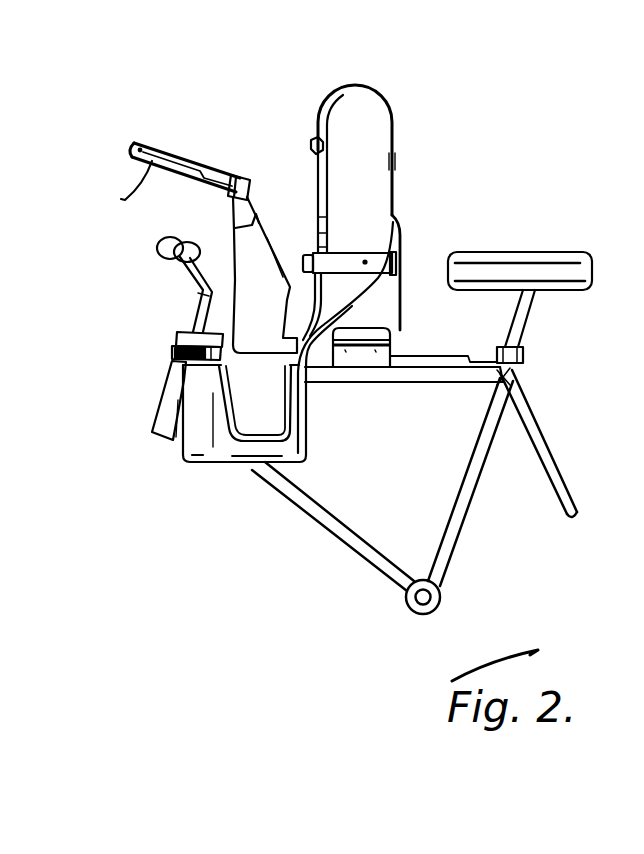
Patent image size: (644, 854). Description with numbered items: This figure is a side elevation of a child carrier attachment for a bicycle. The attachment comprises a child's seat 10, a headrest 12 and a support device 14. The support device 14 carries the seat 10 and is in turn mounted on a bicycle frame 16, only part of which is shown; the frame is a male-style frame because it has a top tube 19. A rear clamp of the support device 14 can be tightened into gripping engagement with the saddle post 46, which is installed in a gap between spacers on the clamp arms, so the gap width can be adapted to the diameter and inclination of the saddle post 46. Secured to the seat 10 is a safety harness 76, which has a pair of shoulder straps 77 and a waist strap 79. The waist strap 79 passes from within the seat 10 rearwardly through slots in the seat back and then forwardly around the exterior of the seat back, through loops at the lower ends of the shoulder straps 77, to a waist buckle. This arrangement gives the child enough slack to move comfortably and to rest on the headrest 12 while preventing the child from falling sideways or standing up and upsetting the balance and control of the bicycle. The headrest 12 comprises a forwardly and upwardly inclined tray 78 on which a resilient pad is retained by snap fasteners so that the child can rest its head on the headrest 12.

The child's seat 10 is at (189, 480).
The headrest 12 is at (193, 124).
The support device 14 is at (428, 330).
The bicycle frame 16 is at (329, 570).
The top tube 19 is at (370, 373).
The saddle post 46 is at (522, 326).
The safety harness 76 is at (424, 122).
The shoulder straps 77 is at (372, 86).
The tray 78 is at (148, 163).
The waist strap 79 is at (348, 260).